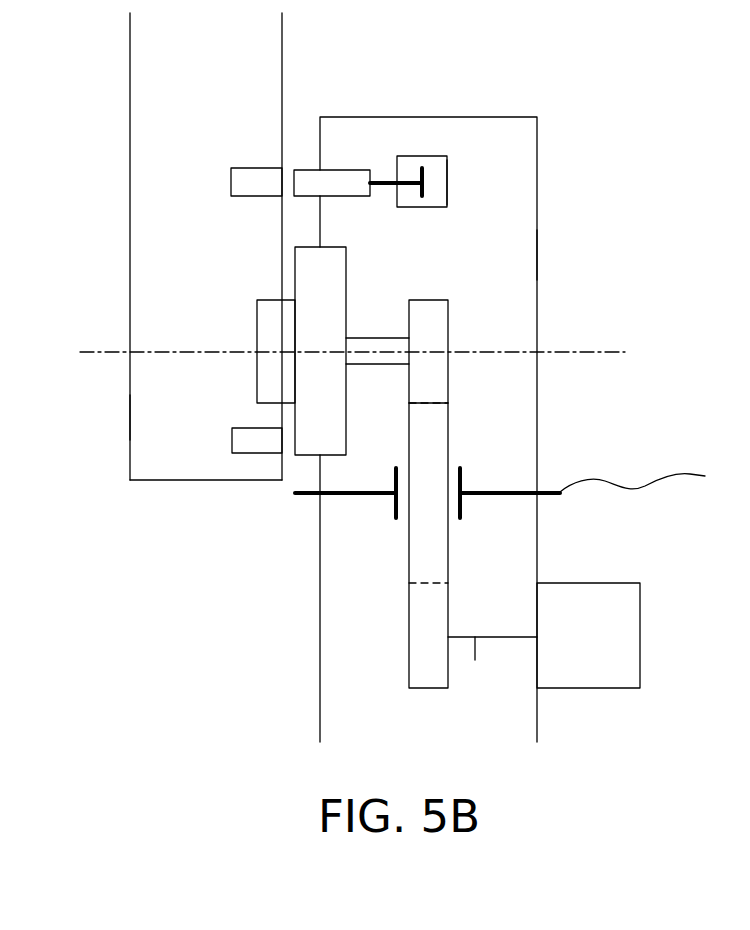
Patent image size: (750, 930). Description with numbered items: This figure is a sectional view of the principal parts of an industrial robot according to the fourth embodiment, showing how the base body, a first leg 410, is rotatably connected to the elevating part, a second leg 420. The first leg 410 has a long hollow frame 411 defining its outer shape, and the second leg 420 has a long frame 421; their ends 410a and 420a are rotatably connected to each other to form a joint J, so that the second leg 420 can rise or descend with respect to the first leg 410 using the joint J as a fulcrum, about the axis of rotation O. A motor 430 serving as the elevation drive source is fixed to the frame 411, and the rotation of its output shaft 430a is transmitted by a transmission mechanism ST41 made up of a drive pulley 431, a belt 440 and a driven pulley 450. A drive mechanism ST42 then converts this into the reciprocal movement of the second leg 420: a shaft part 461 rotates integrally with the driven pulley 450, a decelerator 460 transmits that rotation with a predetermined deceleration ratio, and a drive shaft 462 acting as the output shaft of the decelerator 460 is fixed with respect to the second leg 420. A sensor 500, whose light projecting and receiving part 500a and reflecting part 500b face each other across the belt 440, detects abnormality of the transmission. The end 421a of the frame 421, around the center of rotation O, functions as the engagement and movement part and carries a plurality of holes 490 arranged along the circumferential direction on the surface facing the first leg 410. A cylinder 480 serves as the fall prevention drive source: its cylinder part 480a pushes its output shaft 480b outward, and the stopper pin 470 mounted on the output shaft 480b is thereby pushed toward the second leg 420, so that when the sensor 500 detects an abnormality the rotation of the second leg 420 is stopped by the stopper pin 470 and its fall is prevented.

The first leg 410 is at (537, 218).
The end of the first leg 410a is at (528, 255).
The frame 411 is at (320, 700).
The second leg 420 is at (272, 62).
The end of the second leg 420a is at (138, 415).
The frame 421 is at (130, 87).
The end of the frame 421a is at (137, 450).
The motor 430 is at (641, 636).
The output shaft 430a is at (475, 660).
The drive pulley 431 is at (448, 672).
The belt 440 is at (440, 434).
The driven pulley 450 is at (449, 323).
The decelerator 460 is at (318, 445).
The shaft part 461 is at (385, 358).
The drive shaft 462 is at (265, 372).
The stopper pin 470 is at (340, 183).
The cylinder 480 is at (424, 176).
The cylinder part 480a is at (447, 181).
The output shaft 480b is at (382, 181).
The holes 490 is at (231, 185).
The sensor 500 is at (507, 495).
The light projecting and receiving part 500a is at (462, 512).
The reflecting part 500b is at (395, 506).
The axis of rotation O is at (367, 352).
The joint J is at (593, 292).
The transmission mechanism ST41 is at (474, 376).
The drive mechanism ST42 is at (264, 286).